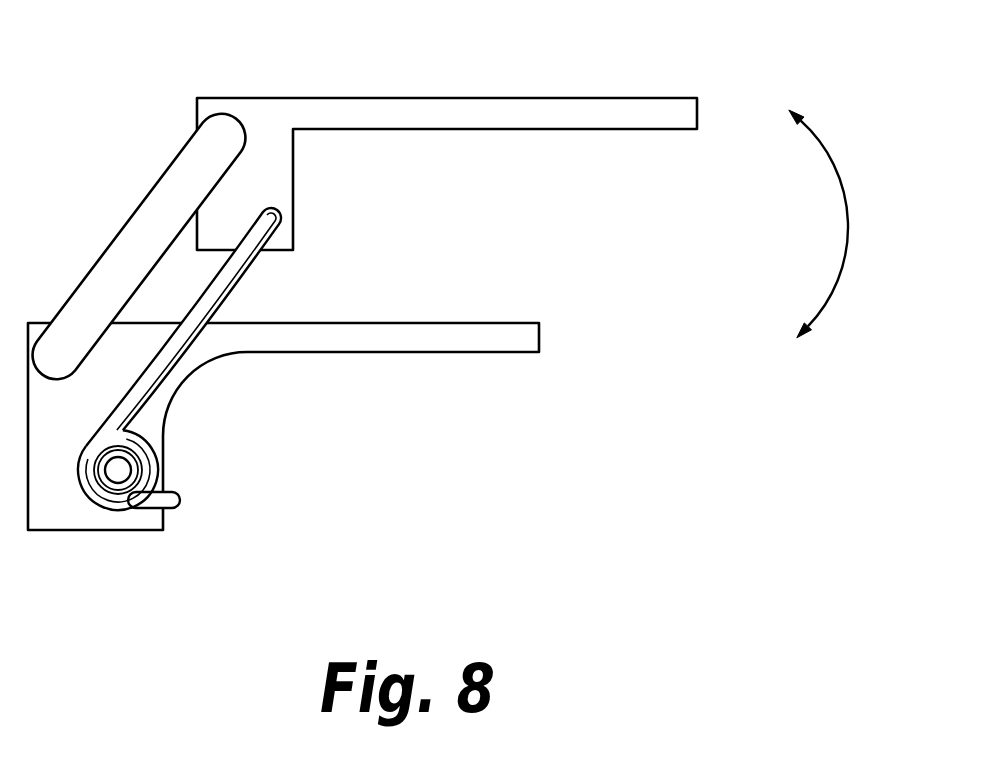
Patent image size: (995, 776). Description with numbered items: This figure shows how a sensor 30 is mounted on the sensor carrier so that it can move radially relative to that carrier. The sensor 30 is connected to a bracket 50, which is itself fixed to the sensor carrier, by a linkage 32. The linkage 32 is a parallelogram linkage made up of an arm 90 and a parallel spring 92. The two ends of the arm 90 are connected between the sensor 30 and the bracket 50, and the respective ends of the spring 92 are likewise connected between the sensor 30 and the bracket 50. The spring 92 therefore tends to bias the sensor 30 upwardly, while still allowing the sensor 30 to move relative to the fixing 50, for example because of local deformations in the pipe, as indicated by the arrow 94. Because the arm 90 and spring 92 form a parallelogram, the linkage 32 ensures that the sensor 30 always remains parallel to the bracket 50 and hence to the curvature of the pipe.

The sensor 30 is at (418, 107).
The linkage 32 is at (73, 208).
The bracket 50 is at (408, 345).
The arm 90 is at (163, 205).
The spring 92 is at (178, 352).
The arrow 94 is at (845, 257).